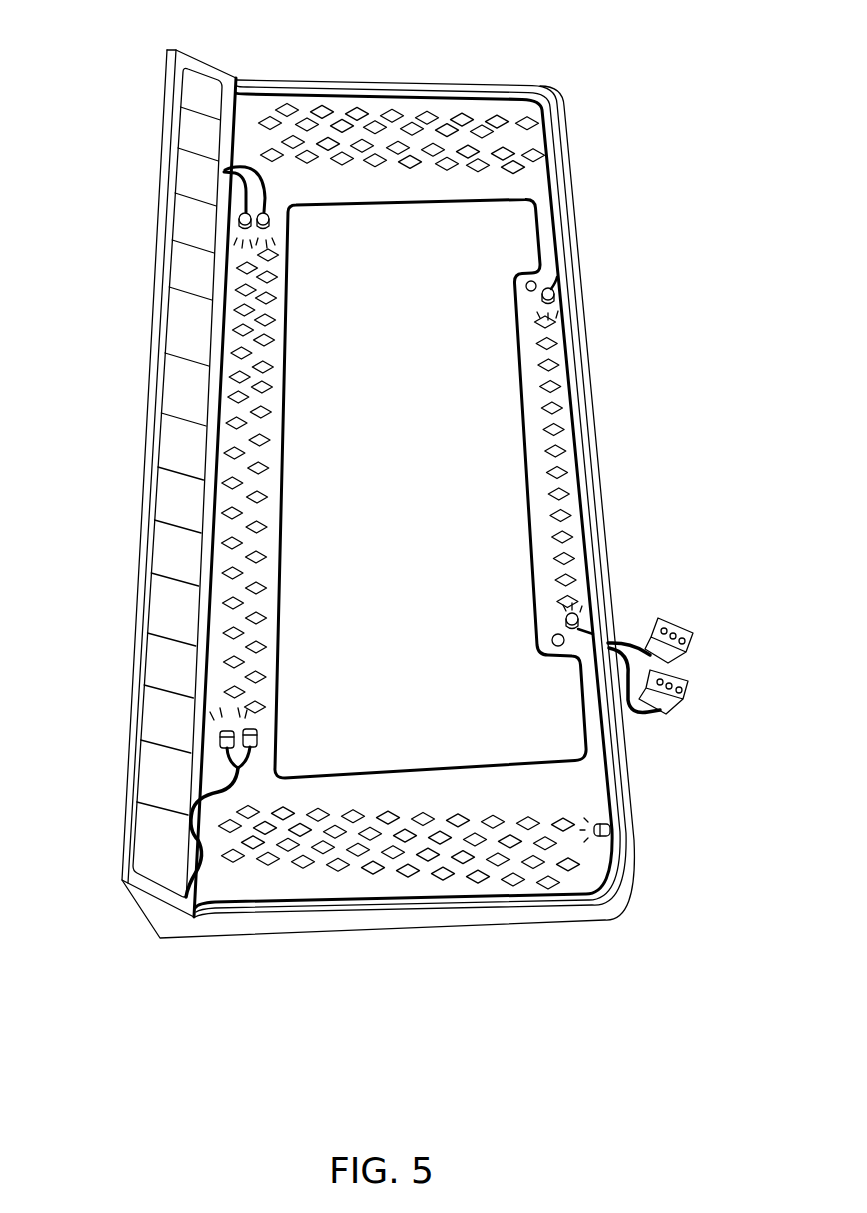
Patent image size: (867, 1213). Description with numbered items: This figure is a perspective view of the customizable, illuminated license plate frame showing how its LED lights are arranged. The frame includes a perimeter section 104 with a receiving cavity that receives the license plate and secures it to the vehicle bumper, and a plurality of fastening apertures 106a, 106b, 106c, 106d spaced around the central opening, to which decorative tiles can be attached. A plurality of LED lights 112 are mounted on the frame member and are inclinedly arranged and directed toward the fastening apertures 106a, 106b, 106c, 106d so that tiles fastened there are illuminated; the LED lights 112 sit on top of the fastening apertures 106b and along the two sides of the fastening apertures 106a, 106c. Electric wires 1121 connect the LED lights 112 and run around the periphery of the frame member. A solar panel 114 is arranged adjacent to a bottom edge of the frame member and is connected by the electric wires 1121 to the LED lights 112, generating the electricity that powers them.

The perimeter section 104 is at (590, 912).
The fastening aperture 106a is at (562, 528).
The fastening aperture 106b is at (468, 878).
The fastening aperture 106c is at (228, 425).
The fastening aperture 106d is at (470, 108).
The LED lights 112 is at (240, 215).
The electric wires 1121 is at (560, 90).
The solar panel 114 is at (152, 705).